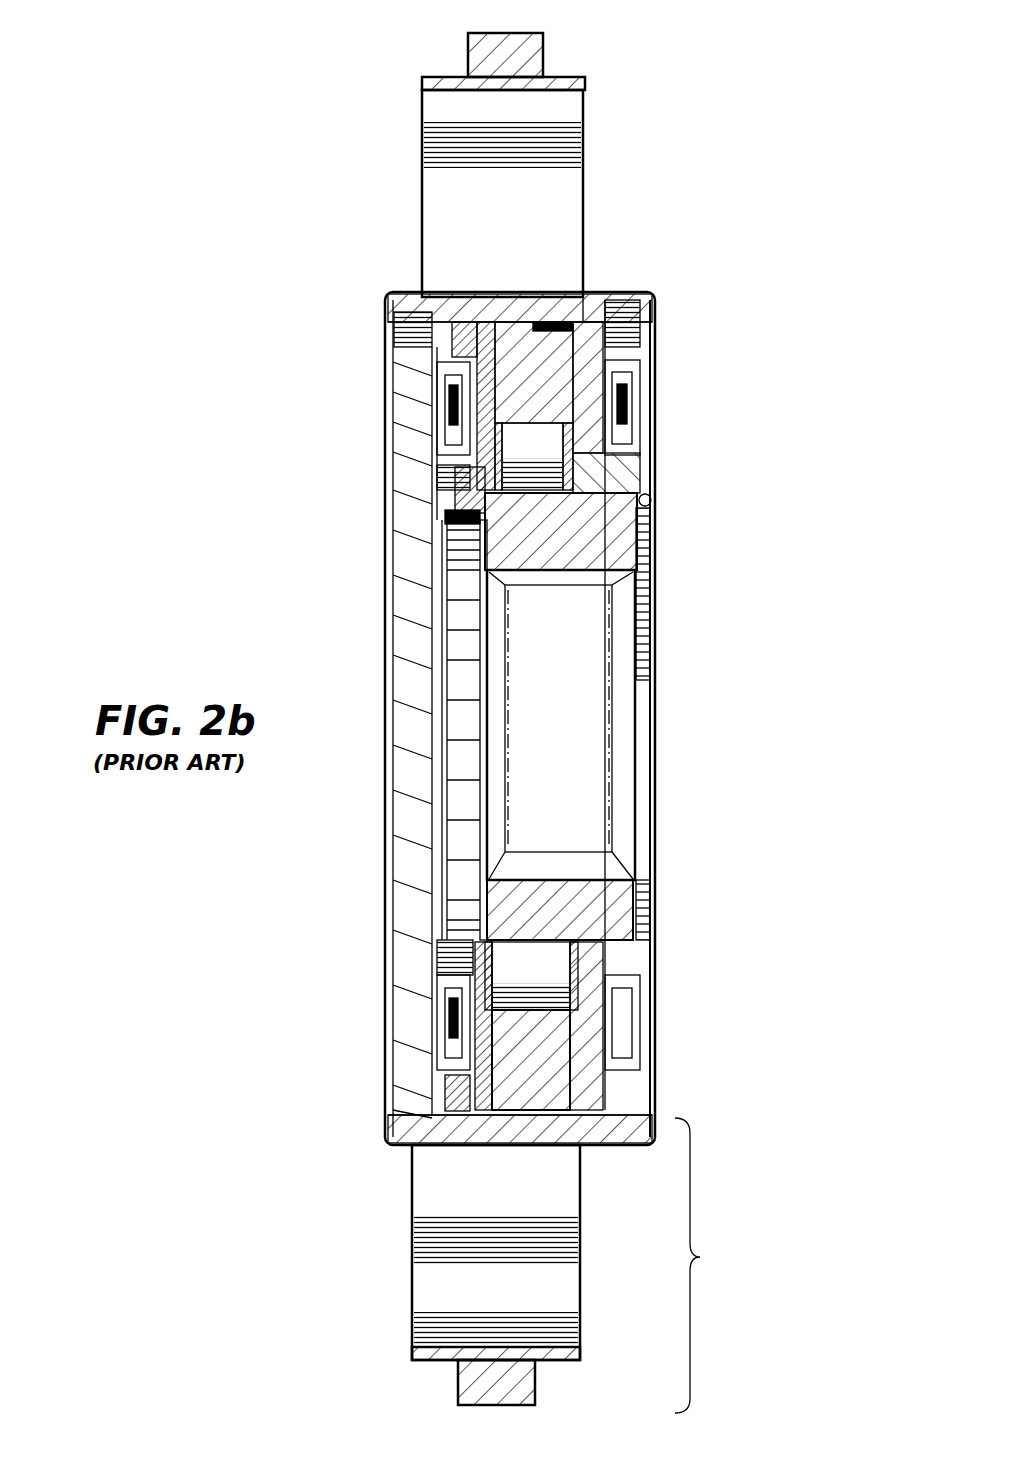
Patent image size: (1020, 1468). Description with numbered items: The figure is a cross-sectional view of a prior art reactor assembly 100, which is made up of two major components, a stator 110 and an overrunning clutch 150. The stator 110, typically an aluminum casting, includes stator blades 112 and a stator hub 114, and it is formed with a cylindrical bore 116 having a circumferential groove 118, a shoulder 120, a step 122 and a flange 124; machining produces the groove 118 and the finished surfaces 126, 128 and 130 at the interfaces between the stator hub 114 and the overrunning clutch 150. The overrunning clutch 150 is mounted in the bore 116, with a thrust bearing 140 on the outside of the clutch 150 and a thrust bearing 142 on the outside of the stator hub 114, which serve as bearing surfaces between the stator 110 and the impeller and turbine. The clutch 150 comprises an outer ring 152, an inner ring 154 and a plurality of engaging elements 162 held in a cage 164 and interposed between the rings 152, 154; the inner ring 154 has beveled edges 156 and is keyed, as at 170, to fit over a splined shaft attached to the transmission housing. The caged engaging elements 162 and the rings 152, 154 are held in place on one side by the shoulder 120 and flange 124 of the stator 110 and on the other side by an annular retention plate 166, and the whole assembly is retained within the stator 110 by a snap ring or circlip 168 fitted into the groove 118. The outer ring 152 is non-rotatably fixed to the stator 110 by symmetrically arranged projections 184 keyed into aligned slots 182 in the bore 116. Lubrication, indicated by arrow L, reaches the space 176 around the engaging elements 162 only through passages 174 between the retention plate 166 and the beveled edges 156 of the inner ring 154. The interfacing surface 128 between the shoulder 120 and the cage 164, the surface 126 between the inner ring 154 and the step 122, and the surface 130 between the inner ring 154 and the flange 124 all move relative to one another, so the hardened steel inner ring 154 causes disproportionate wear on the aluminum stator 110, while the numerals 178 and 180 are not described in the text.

The reactor assembly 100 is at (742, 465).
The stator 110 is at (754, 1270).
The stator blades 112 is at (580, 104).
The stator hub 114 is at (402, 292).
The cylindrical bore 116 is at (548, 1090).
The circumferential groove 118 is at (398, 1124).
The shoulder 120 is at (640, 331).
The step 122 is at (578, 506).
The flange 124 is at (648, 518).
The finished surface 126 is at (613, 500).
The finished surface 128 is at (566, 362).
The finished surface 130 is at (651, 506).
The thrust bearing 140 is at (438, 405).
The thrust bearing 142 is at (640, 392).
The overrunning clutch 150 is at (672, 690).
The outer ring 152 is at (588, 300).
The inner ring 154 is at (539, 557).
The beveled edges 156 is at (642, 489).
The engaging elements 162 is at (548, 449).
The cage 164 is at (638, 438).
The annular retention plate 166 is at (492, 298).
The snap ring or circlip 168 is at (458, 298).
The key 170 is at (602, 848).
The passages 174 is at (459, 502).
The space 176 is at (514, 412).
The seal 178 is at (453, 474).
The threaded portion 180 is at (396, 348).
The slots 182 is at (558, 298).
The projections 184 is at (524, 298).
The arrow L is at (486, 936).